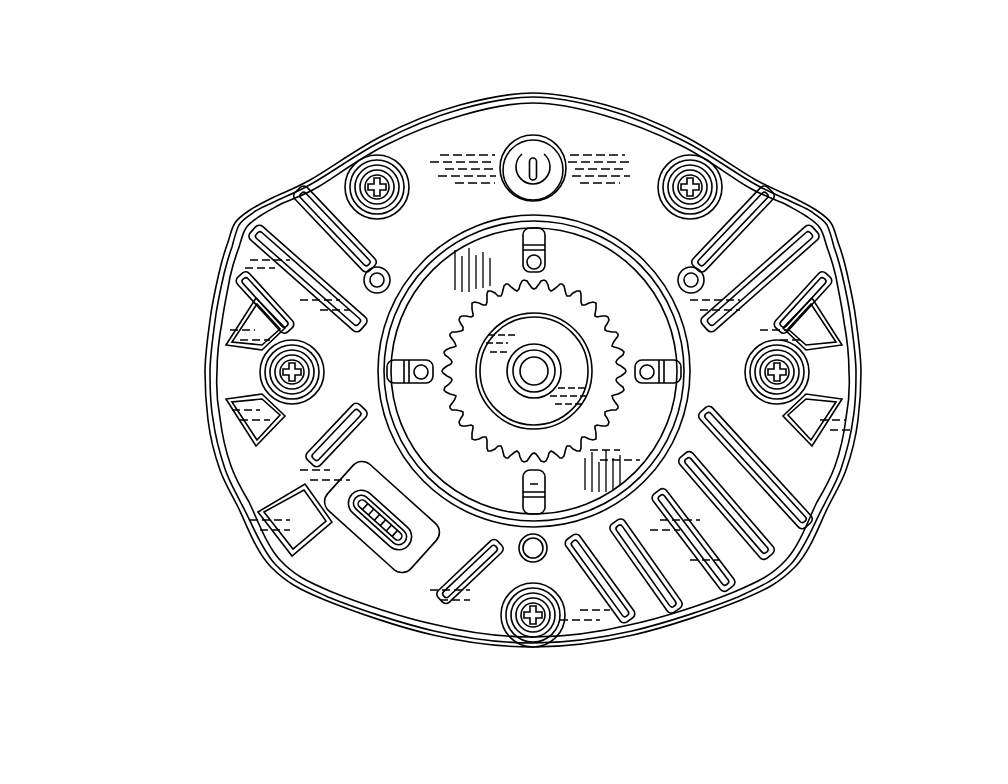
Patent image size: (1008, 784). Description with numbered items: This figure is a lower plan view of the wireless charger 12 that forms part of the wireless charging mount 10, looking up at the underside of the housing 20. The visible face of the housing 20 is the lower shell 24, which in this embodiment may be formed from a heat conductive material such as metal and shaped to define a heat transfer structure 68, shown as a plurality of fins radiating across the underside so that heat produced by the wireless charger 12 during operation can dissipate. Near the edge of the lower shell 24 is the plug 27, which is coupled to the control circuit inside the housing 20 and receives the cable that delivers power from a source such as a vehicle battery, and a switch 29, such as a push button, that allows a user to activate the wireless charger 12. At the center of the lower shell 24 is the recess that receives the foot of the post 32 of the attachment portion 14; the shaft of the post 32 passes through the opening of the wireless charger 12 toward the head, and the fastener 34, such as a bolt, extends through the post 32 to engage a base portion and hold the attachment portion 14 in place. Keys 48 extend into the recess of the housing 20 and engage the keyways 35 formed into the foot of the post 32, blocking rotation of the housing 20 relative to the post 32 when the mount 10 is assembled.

The wireless charging mount 10 is at (182, 124).
The wireless charger 12 is at (303, 153).
The attachment portion 14 is at (469, 490).
The housing 20 is at (435, 110).
The lower shell 24 is at (489, 148).
The plug 27 is at (372, 554).
The switch 29 is at (556, 132).
The post 32 is at (596, 487).
The fastener 34 is at (547, 380).
The keyways 35 is at (403, 396).
The keys 48 is at (380, 368).
The heat transfer structure 68 is at (772, 486).